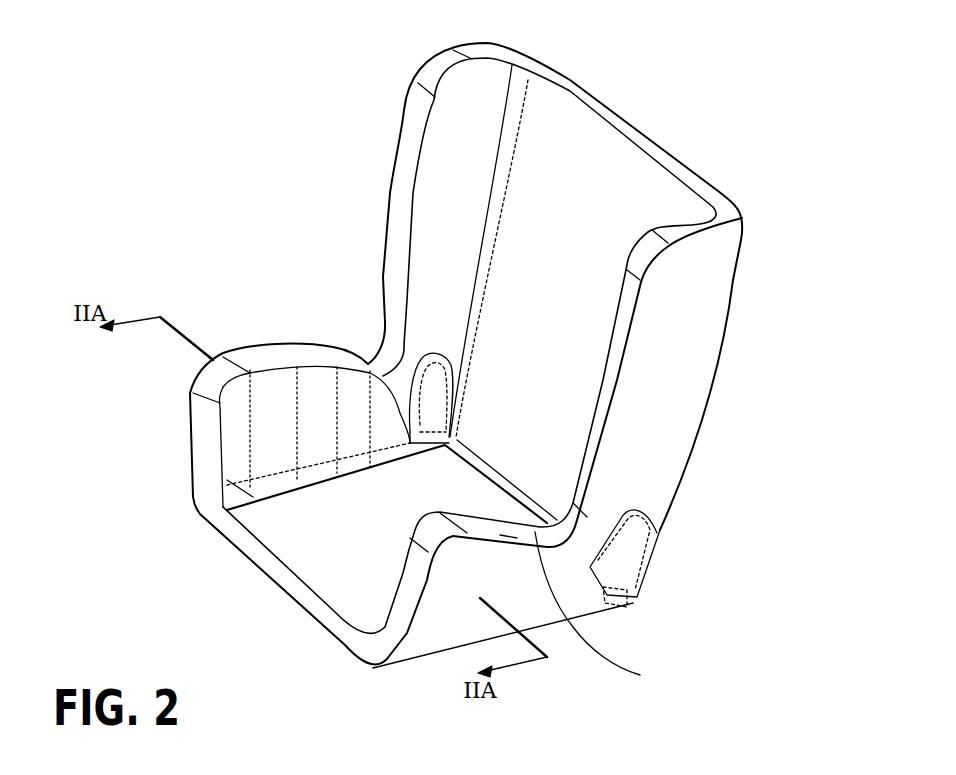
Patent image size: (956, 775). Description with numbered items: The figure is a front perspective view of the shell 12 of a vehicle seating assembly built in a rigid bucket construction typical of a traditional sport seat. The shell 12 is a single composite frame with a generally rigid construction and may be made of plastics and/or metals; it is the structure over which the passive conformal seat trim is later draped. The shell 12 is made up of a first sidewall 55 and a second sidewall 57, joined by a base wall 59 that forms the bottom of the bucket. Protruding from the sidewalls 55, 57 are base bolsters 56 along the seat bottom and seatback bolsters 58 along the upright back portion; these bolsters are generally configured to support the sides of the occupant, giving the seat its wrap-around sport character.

The shell 12 is at (660, 140).
The first sidewall 55 is at (455, 147).
The base bolsters 56 is at (270, 357).
The second sidewall 57 is at (670, 357).
The seatback bolsters 58 is at (403, 230).
The base wall 59 is at (320, 555).